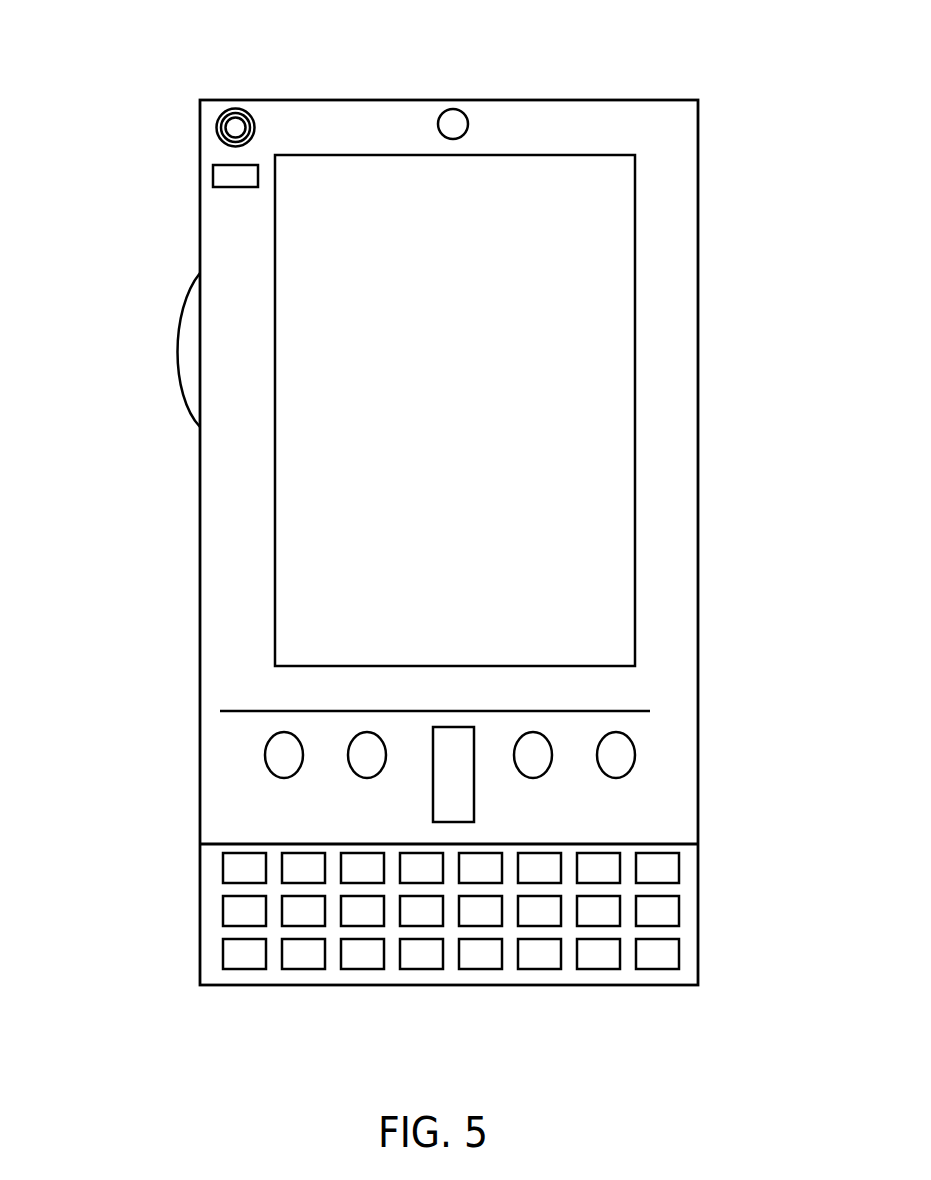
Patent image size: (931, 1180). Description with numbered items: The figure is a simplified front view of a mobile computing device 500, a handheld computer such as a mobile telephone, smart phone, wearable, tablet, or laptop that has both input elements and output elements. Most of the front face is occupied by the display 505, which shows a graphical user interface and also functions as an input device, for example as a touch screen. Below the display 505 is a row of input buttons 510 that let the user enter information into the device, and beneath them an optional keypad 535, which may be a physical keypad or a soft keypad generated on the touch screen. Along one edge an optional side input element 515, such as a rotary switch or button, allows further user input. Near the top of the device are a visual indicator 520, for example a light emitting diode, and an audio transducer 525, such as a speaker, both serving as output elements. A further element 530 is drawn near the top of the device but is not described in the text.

The mobile computing device 500 is at (685, 118).
The display 505 is at (385, 578).
The input buttons 510 is at (452, 781).
The side input element 515 is at (190, 350).
The visual indicator 520 is at (213, 181).
The audio transducer 525 is at (212, 130).
The speaker 530 is at (463, 123).
The keypad 535 is at (208, 959).